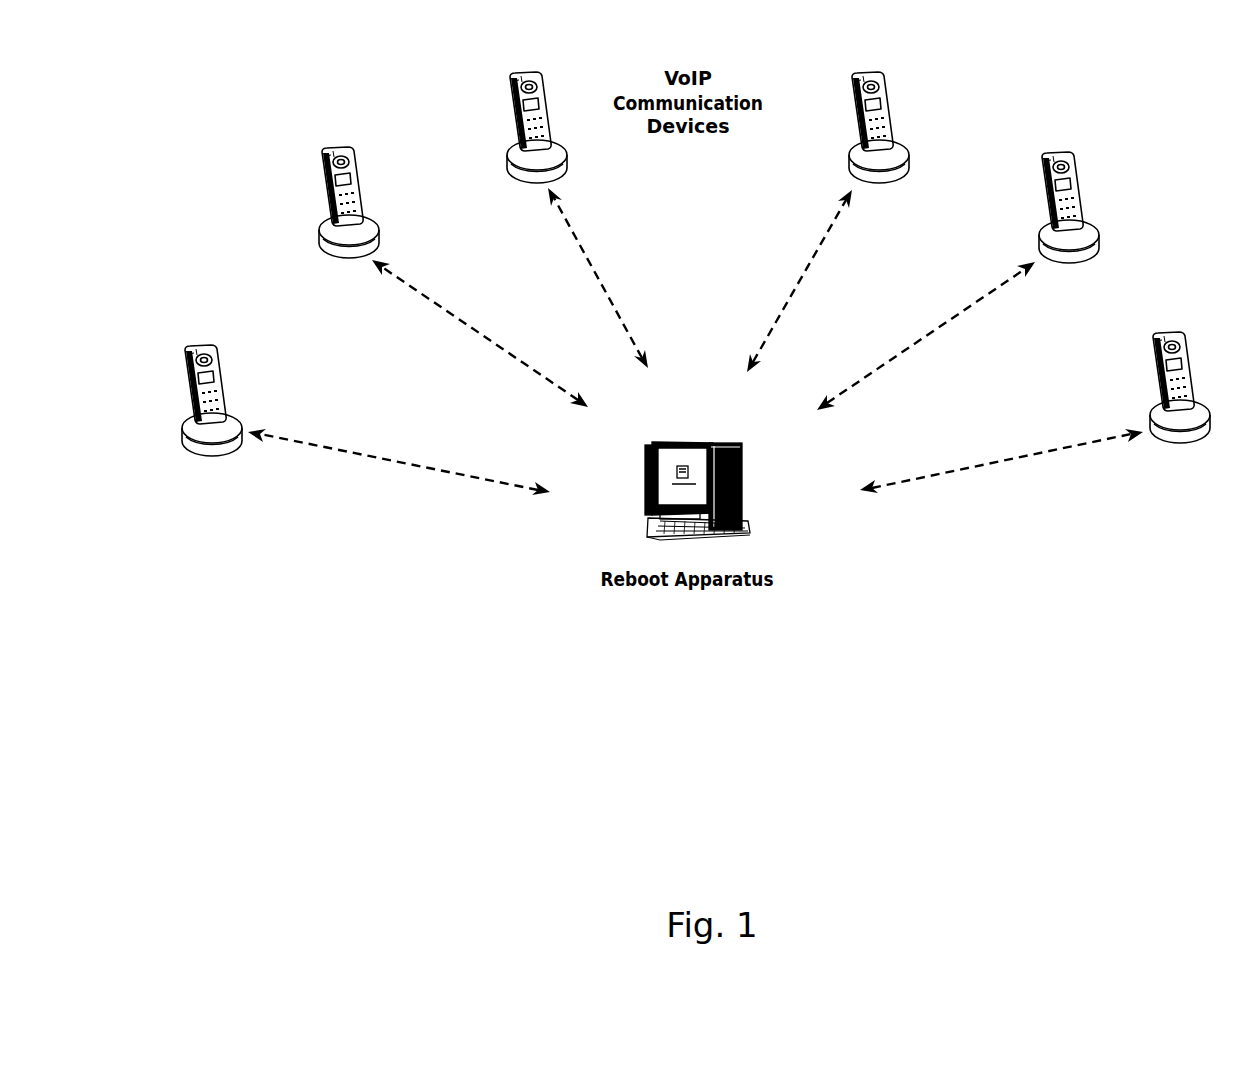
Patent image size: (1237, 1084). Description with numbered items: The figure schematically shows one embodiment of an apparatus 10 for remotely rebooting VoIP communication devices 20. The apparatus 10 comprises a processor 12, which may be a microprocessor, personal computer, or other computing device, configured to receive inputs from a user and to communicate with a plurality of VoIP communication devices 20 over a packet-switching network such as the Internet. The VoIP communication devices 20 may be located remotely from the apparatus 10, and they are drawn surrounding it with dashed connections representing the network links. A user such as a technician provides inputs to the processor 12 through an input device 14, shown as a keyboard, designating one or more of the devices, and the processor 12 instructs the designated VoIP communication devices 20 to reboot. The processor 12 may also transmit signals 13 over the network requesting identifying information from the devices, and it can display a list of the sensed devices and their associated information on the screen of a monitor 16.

The apparatus 10 is at (650, 529).
The processor 12 is at (742, 470).
The signals 13 is at (925, 335).
The input device 14 is at (733, 532).
The monitor 16 is at (670, 472).
The VoIP communication devices 20 is at (195, 328).